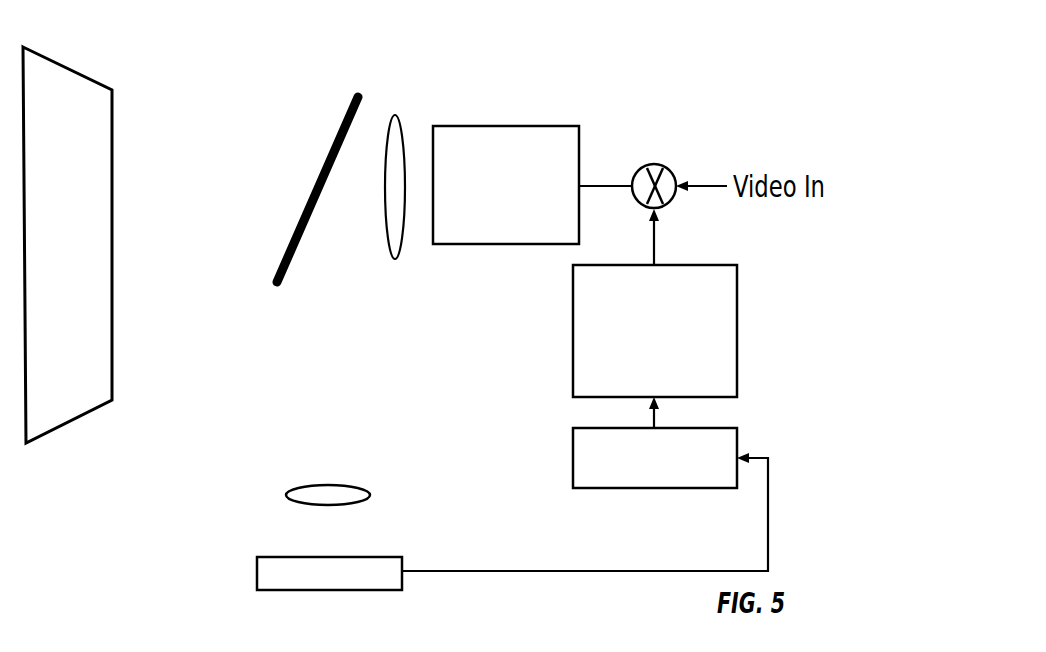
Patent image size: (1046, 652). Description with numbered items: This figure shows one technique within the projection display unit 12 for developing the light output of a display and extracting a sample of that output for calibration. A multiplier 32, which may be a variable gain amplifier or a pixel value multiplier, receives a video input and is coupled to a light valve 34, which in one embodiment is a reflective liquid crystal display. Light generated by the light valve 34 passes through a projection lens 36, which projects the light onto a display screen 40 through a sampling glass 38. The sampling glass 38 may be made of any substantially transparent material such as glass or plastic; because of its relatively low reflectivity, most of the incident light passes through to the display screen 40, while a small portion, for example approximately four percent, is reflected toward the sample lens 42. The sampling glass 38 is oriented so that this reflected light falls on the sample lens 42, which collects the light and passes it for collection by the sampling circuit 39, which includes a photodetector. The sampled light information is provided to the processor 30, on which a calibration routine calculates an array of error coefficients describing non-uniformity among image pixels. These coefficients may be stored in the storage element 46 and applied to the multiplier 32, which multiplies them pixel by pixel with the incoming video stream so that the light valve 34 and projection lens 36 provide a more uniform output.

The projection display unit 12 is at (670, 51).
The processor 30 is at (694, 433).
The multiplier 32 is at (683, 159).
The light valve 34 is at (506, 158).
The projection lens 36 is at (431, 215).
The sampling glass 38 is at (359, 161).
The sampling circuit 39 is at (342, 583).
The display screen 40 is at (97, 245).
The sample lens 42 is at (308, 469).
The storage element 46 is at (695, 331).